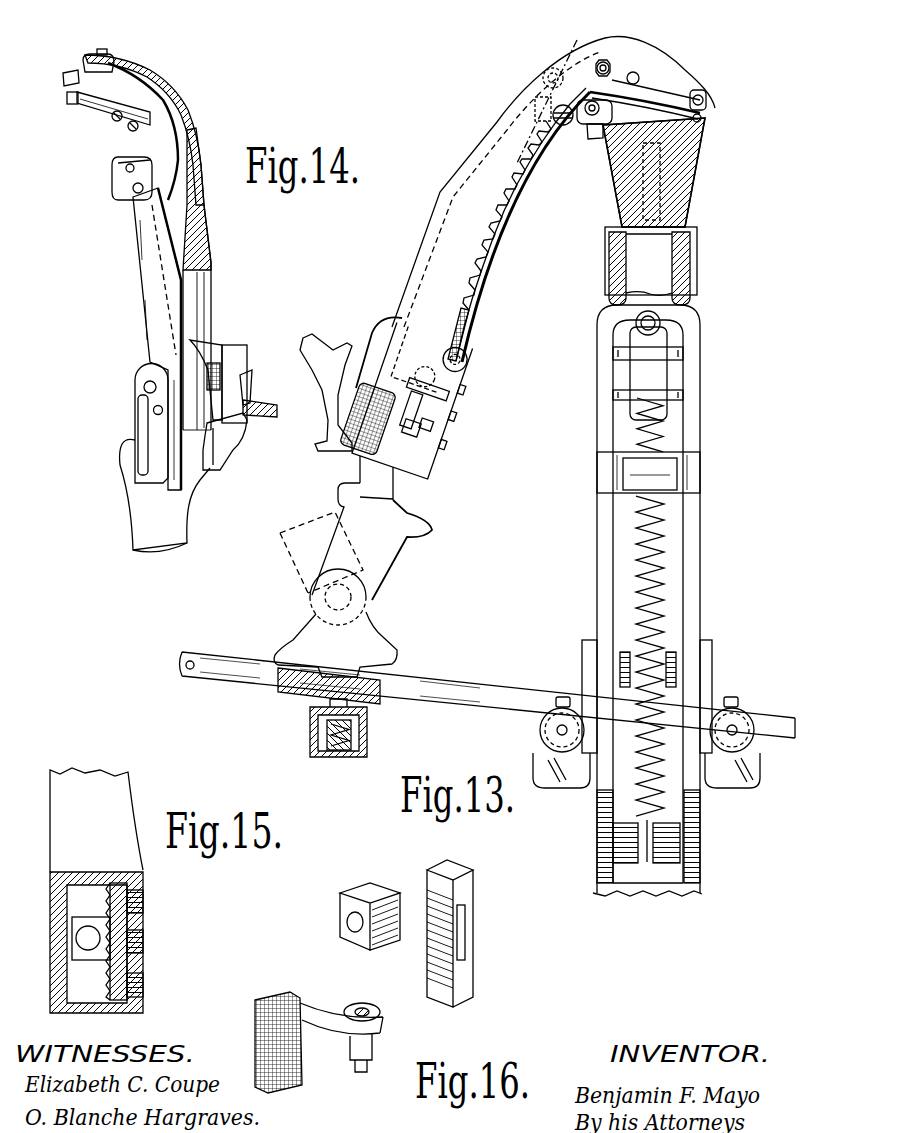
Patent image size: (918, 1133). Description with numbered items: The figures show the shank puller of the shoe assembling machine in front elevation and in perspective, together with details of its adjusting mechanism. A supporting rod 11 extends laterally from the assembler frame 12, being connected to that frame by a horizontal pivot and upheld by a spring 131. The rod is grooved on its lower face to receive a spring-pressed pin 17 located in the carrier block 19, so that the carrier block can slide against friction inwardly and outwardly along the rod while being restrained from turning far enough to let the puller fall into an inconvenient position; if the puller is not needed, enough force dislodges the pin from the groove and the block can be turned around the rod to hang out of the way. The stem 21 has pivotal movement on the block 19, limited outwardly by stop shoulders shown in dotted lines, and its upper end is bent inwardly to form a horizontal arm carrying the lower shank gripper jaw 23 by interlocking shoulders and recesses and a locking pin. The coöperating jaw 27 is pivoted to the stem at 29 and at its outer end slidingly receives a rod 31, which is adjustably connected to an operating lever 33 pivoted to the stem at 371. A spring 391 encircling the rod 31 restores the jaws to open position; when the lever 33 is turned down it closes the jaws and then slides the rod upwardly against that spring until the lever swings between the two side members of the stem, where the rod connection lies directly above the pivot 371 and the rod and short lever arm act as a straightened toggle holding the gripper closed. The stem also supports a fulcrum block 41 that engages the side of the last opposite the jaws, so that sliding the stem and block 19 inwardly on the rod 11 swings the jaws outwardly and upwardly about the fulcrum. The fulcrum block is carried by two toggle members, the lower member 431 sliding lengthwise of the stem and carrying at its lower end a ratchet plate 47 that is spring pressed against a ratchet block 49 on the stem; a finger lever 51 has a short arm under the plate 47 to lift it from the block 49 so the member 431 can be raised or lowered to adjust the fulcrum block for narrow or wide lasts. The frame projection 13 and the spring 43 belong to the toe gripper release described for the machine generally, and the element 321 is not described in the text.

In FIG. 13, the supporting rod 11 is at (200, 685).
In FIG. 13, the assembler frame 12 is at (694, 342).
In FIG. 13, the projection 13 is at (660, 468).
In FIG. 13, the spring-pressed pin 17 is at (312, 714).
In FIG. 13, the carrier block 19 is at (312, 738).
In FIG. 14, the stem 21 is at (138, 523).
In FIG. 13, the stem 21 is at (384, 534).
In FIG. 14, the lower shank gripper jaw 23 is at (76, 98).
In FIG. 13, the lower shank gripper jaw 23 is at (712, 116).
In FIG. 14, the coöperating jaw 27 is at (65, 80).
In FIG. 13, the coöperating jaw 27 is at (708, 100).
In FIG. 14, the pivot 29 is at (115, 120).
In FIG. 13, the pivot 29 is at (637, 76).
In FIG. 14, the rod 31 is at (147, 326).
In FIG. 13, the rod 31 is at (507, 240).
In FIG. 14, the operating lever 33 is at (230, 432).
In FIG. 13, the operating lever 33 is at (375, 330).
In FIG. 14, the fulcrum block 41 is at (114, 178).
In FIG. 13, the fulcrum block 41 is at (597, 139).
In FIG. 13, the spring 43 is at (660, 431).
In FIG. 15, the ratchet plate 47 is at (110, 897).
In FIG. 16, the ratchet plate 47 is at (460, 892).
In FIG. 15, the ratchet block 49 is at (86, 938).
In FIG. 16, the ratchet block 49 is at (345, 905).
In FIG. 14, the finger lever 51 is at (238, 368).
In FIG. 13, the finger lever 51 is at (350, 447).
In FIG. 16, the finger lever 51 is at (337, 1015).
In FIG. 13, the spring 131 is at (535, 757).
In FIG. 13, the housing 321 is at (398, 322).
In FIG. 14, the pivotal support 371 is at (144, 388).
In FIG. 13, the spring 391 is at (503, 250).
In FIG. 14, the lower toggle member 431 is at (147, 217).
In FIG. 13, the lower toggle member 431 is at (553, 148).
In FIG. 15, the lower toggle member 431 is at (62, 876).